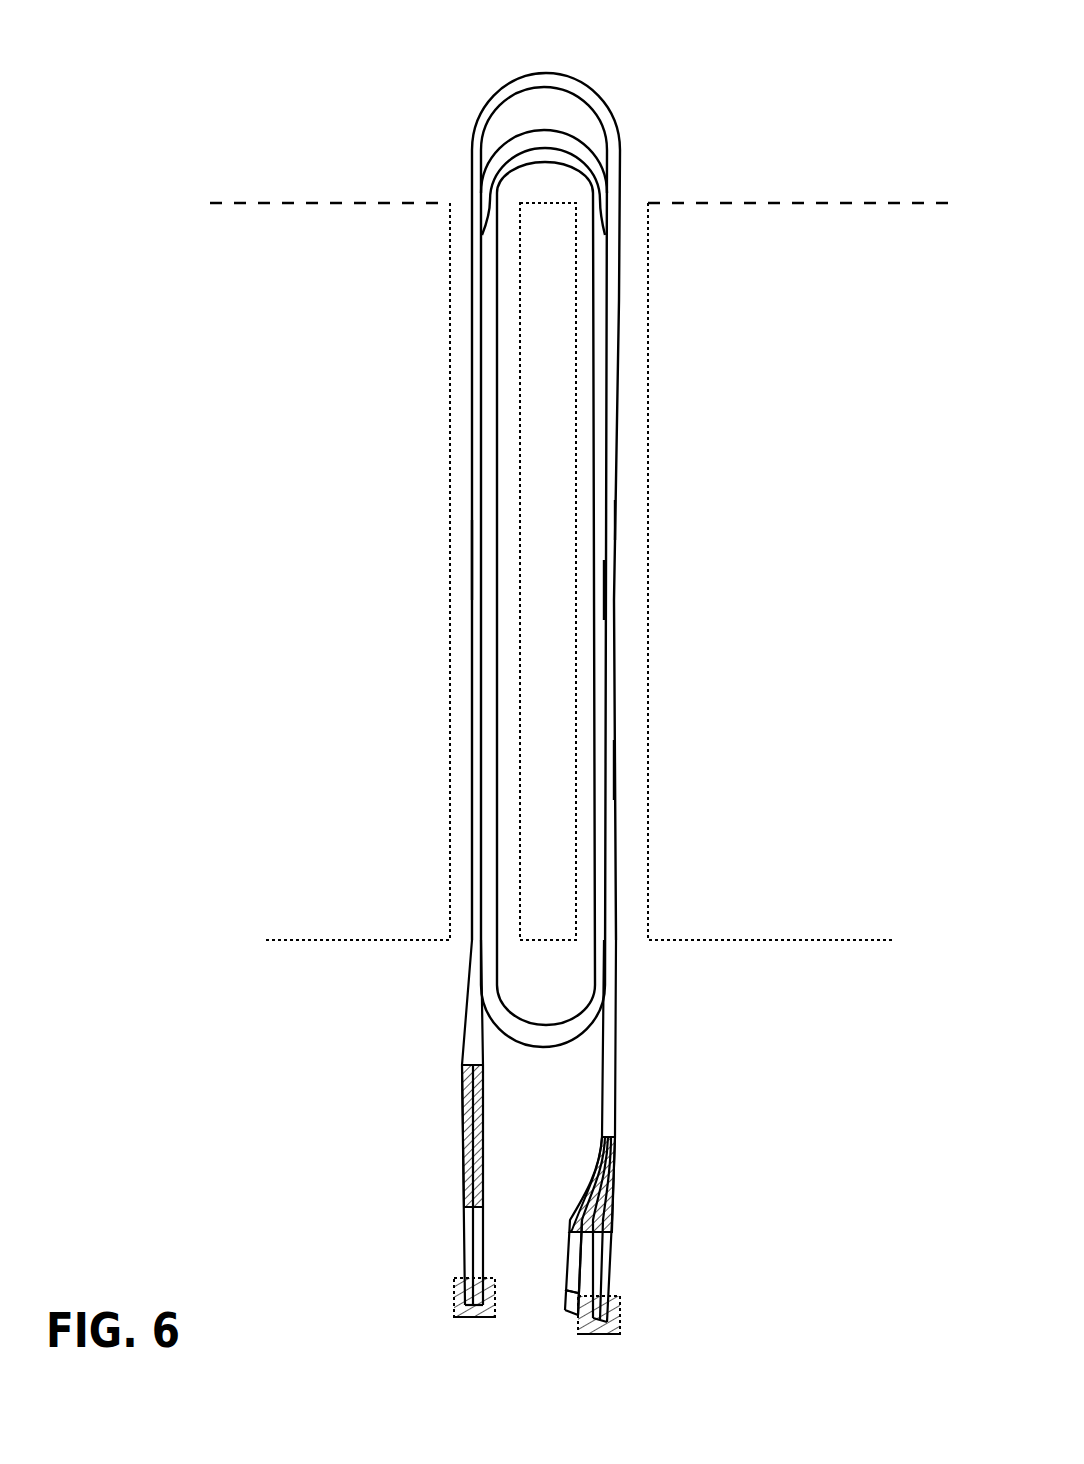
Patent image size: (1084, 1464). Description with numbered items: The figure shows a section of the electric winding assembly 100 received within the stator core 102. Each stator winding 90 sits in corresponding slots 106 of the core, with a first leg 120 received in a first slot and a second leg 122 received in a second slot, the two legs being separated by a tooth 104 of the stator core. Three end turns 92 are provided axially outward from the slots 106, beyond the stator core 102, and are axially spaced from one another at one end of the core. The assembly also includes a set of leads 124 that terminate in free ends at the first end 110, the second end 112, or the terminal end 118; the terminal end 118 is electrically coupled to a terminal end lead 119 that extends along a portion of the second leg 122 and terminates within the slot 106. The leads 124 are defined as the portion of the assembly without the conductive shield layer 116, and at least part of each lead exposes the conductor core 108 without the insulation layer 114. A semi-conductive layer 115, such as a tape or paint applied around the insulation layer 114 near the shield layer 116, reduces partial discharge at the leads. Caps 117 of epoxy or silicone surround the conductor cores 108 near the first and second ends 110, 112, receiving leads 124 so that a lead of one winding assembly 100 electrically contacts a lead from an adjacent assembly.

The stator winding 90 is at (619, 765).
The end turn 92 is at (512, 78).
The electric winding assembly 100 is at (245, 120).
The stator core 102 is at (343, 200).
The tooth 104 is at (576, 220).
The slot 106 is at (450, 280).
The conductor core 108 is at (457, 1290).
The first end 110 is at (620, 1333).
The second end 112 is at (455, 1317).
The insulation layer 114 is at (462, 1218).
The semi-conductive layer 115 is at (613, 1165).
The conductive shield layer 116 is at (615, 590).
The cap 117 is at (455, 1305).
The terminal end 118 is at (575, 1307).
The terminal end lead 119 is at (563, 1188).
The first leg 120 is at (471, 520).
The second leg 122 is at (615, 502).
The lead 124 is at (446, 1093).